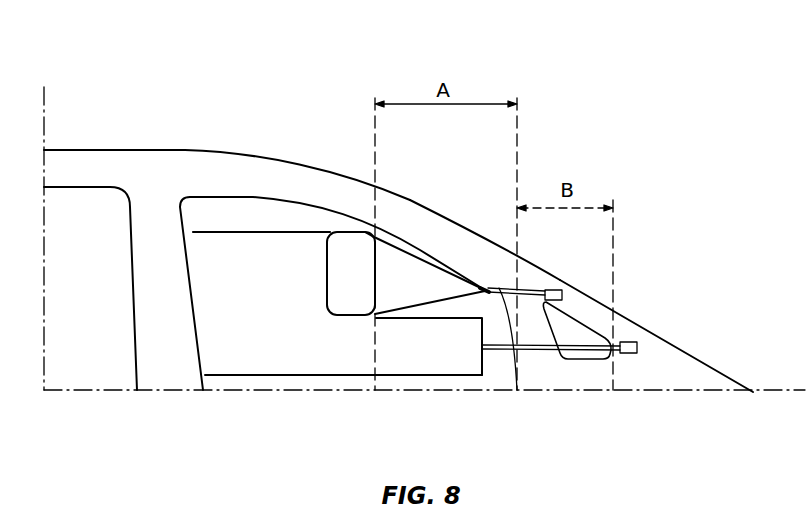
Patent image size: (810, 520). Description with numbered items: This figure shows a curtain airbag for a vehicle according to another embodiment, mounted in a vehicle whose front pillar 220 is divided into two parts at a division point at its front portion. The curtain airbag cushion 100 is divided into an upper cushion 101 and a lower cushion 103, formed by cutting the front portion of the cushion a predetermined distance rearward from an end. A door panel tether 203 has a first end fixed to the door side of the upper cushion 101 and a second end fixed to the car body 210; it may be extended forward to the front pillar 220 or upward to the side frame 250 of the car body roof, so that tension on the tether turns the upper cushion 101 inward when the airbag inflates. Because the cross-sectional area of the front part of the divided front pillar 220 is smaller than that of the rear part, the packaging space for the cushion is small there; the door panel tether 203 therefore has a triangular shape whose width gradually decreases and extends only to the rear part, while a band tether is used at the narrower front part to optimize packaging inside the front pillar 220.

The curtain airbag cushion 100 is at (270, 230).
The upper cushion 101 is at (347, 250).
The lower cushion 103 is at (470, 357).
The door panel tether 203 is at (400, 277).
The car body 210 is at (680, 347).
The front pillar 220 is at (537, 280).
The side frame 250 is at (358, 192).